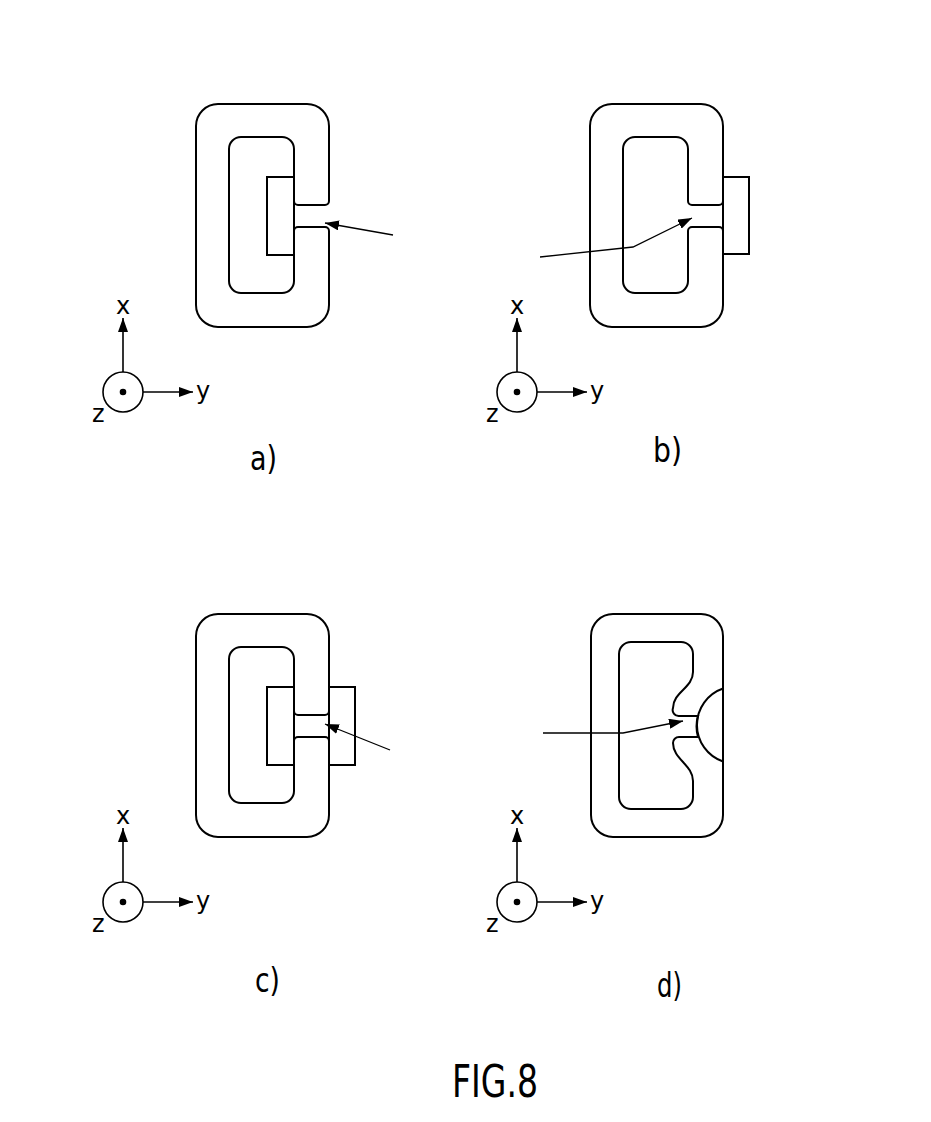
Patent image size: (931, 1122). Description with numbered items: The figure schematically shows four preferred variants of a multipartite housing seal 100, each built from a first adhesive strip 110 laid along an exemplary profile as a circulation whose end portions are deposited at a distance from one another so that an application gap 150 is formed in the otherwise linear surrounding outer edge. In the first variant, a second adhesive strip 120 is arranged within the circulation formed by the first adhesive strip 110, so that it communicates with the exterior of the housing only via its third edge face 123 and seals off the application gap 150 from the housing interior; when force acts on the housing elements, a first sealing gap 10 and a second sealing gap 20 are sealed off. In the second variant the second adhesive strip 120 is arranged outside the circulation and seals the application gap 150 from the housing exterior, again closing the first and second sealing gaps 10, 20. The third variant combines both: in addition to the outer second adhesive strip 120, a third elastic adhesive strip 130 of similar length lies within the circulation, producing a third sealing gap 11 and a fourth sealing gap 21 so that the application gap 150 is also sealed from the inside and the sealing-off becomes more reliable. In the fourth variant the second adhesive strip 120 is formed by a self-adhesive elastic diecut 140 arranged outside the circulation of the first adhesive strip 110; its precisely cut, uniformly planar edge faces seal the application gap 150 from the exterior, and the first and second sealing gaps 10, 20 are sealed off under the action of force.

The multipartite housing seal 100 is at (195, 108).
The first adhesive strip 110 is at (205, 213).
The first sealing gap 10 is at (296, 190).
The third sealing gap 11 is at (295, 697).
The second adhesive strip 120 is at (280, 183).
The third edge face 123 is at (296, 212).
The third elastic adhesive strip 130 is at (273, 743).
The self-adhesive elastic diecut 140 is at (715, 727).
The application gap 150 is at (508, 491).
The second sealing gap 20 is at (296, 245).
The fourth sealing gap 21 is at (295, 757).